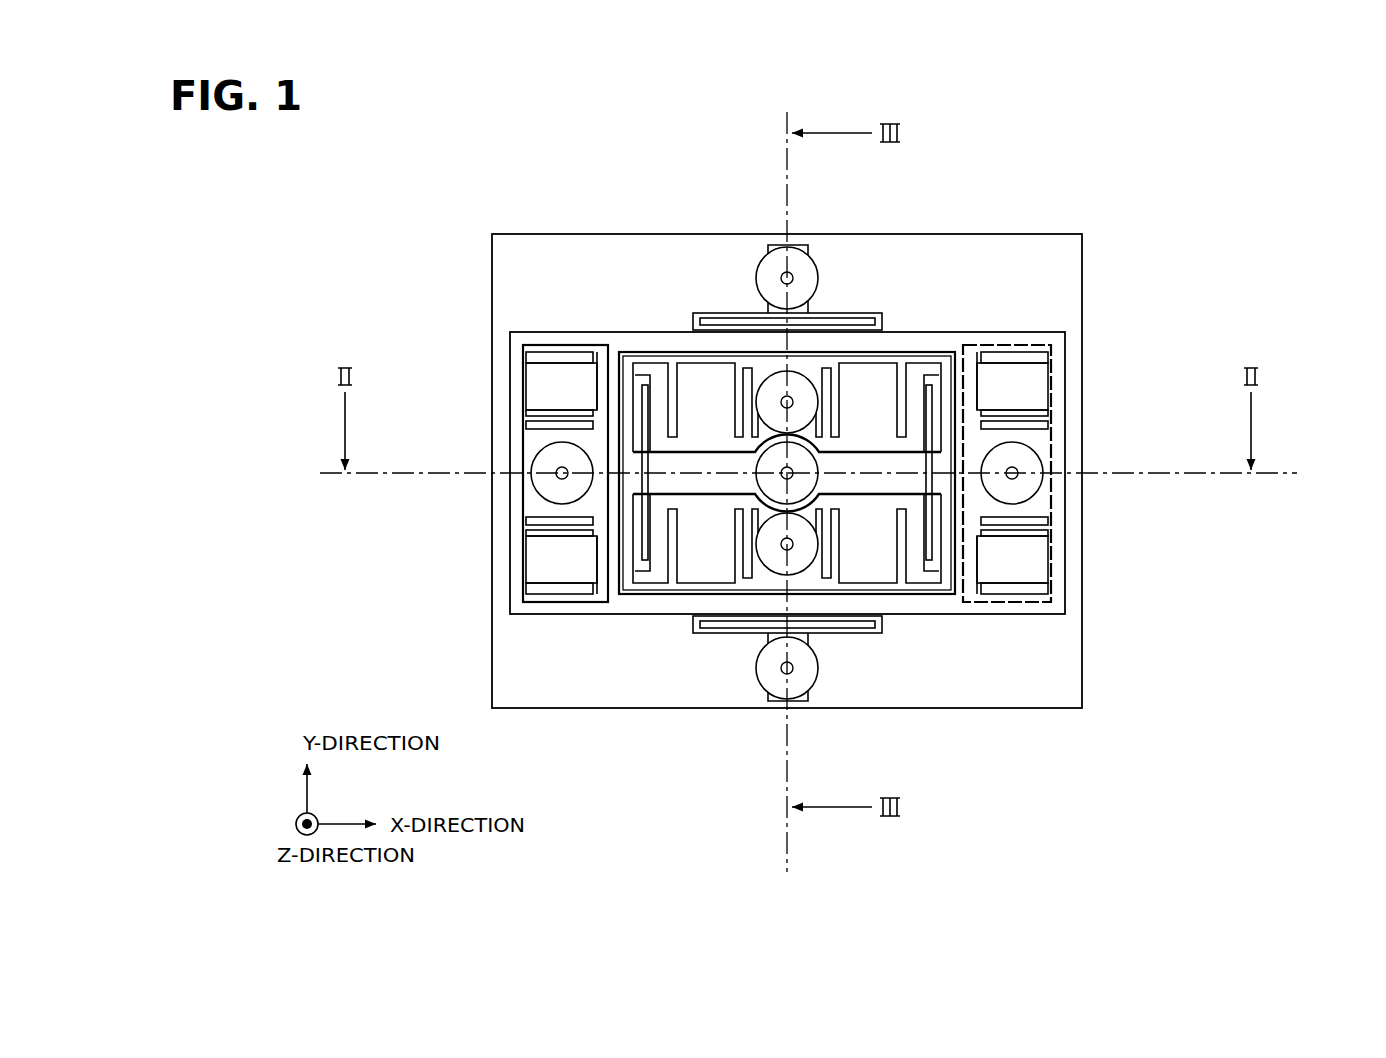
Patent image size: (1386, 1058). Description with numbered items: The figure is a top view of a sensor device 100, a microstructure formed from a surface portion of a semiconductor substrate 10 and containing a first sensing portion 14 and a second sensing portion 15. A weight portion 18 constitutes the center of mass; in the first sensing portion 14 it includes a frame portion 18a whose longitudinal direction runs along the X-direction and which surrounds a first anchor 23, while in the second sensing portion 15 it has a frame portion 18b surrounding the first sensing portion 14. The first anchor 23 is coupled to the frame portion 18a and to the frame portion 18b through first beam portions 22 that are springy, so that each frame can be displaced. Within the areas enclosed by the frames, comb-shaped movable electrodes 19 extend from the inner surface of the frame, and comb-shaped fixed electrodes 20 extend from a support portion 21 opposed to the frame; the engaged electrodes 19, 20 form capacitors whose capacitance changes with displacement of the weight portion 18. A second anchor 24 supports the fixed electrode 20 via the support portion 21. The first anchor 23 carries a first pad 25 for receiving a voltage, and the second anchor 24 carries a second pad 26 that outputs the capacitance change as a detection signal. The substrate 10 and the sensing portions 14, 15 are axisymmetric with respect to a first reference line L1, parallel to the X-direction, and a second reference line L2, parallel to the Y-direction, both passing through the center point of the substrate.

The sensor device 100 is at (1343, 159).
The semiconductor substrate 10 is at (1062, 233).
The first sensing portion 14 is at (903, 343).
The second sensing portion 15 is at (987, 330).
The weight portion 18 is at (937, 355).
The frame portion 18a is at (667, 360).
The frame portion 18b is at (598, 338).
The movable electrode 19 is at (533, 360).
The fixed electrode 20 is at (568, 352).
The support portion 21 is at (881, 385).
The first beam portion 22 is at (852, 313).
The first anchor 23 is at (713, 458).
The second anchor 24 is at (765, 573).
The first pad 25 is at (789, 276).
The second pad 26 is at (790, 547).
The first reference line L1 is at (1267, 473).
The second reference line L2 is at (788, 832).